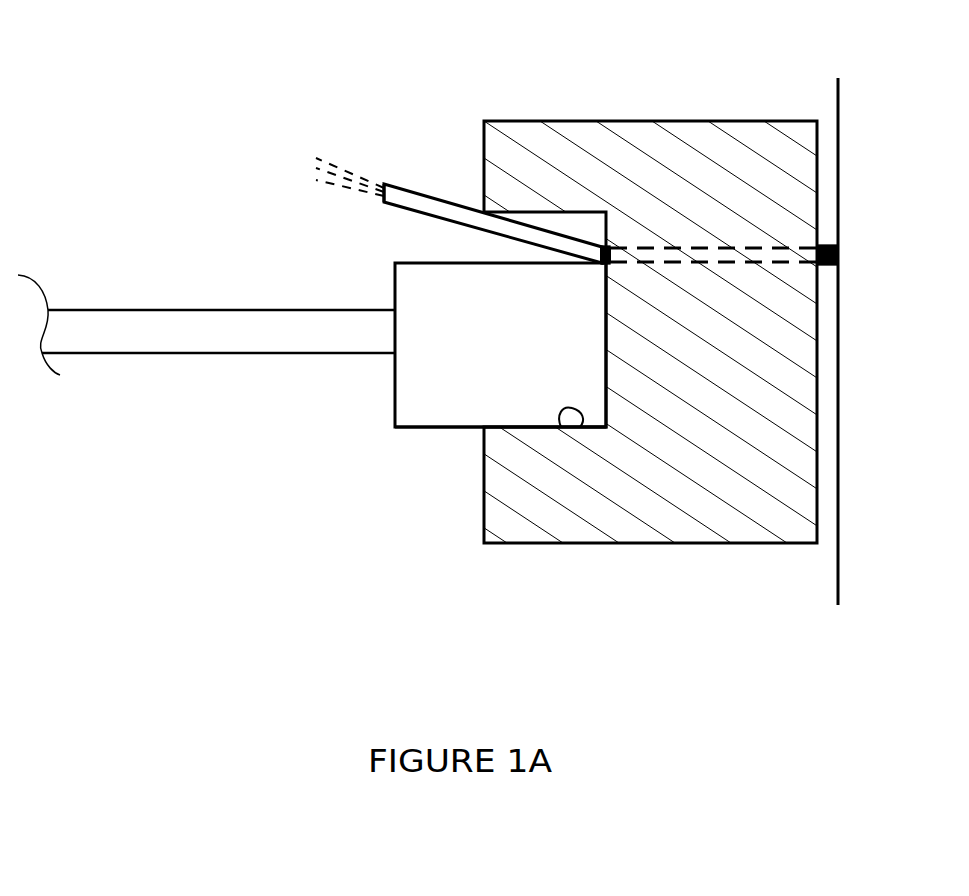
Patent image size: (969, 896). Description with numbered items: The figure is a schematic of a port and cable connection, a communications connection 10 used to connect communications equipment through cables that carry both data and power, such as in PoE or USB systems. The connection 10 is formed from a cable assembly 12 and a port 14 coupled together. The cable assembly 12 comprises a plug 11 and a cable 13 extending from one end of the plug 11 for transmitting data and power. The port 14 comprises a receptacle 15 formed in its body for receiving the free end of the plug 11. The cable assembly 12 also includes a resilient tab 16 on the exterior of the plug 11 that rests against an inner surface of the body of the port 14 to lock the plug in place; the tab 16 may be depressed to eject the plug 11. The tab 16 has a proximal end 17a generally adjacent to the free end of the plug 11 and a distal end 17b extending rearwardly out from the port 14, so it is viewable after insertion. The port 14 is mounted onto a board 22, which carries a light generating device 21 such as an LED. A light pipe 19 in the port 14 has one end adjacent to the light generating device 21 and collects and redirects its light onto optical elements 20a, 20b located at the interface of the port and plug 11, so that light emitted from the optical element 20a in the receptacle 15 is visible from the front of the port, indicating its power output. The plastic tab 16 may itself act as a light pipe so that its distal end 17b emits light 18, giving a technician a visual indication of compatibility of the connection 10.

The communications connection 10 is at (407, 42).
The plug 11 is at (445, 427).
The cable assembly 12 is at (395, 280).
The cable 13 is at (162, 353).
The port 14 is at (590, 121).
The receptacle 15 is at (561, 427).
The resilient tab 16 is at (466, 226).
The proximal end 17a is at (607, 247).
The distal end 17b is at (384, 184).
The light 18 is at (341, 165).
The light pipe 19 is at (682, 248).
The optical element 20a is at (612, 255).
The optical element 20b is at (600, 262).
The light generating device 21 is at (827, 265).
The board 22 is at (838, 108).